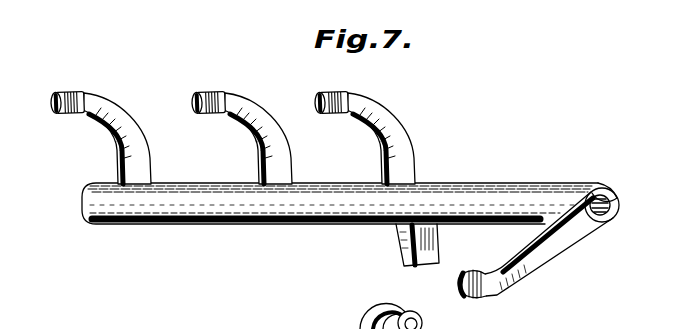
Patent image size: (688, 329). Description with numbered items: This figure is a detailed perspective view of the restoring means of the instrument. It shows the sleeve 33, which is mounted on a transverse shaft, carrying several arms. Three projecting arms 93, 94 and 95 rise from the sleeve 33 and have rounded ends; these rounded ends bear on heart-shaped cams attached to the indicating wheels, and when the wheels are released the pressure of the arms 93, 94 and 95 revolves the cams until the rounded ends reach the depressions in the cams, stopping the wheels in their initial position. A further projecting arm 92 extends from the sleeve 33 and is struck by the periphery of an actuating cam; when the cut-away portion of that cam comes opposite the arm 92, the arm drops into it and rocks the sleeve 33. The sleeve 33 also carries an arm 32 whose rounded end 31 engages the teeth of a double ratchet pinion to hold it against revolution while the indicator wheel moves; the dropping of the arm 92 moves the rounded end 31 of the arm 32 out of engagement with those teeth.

The sleeve 33 is at (461, 187).
The projecting arm 95 is at (109, 109).
The projecting arm 94 is at (250, 110).
The projecting arm 93 is at (387, 124).
The projecting arm 92 is at (404, 253).
The arm 32 is at (545, 258).
The rounded end 31 is at (463, 298).